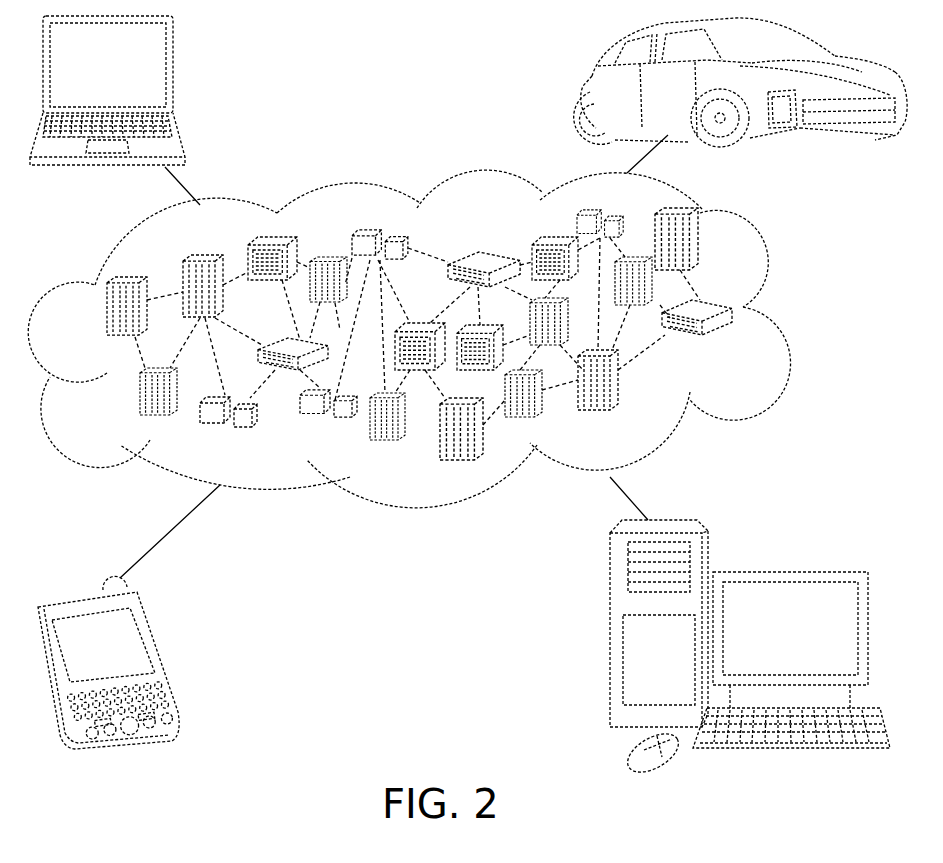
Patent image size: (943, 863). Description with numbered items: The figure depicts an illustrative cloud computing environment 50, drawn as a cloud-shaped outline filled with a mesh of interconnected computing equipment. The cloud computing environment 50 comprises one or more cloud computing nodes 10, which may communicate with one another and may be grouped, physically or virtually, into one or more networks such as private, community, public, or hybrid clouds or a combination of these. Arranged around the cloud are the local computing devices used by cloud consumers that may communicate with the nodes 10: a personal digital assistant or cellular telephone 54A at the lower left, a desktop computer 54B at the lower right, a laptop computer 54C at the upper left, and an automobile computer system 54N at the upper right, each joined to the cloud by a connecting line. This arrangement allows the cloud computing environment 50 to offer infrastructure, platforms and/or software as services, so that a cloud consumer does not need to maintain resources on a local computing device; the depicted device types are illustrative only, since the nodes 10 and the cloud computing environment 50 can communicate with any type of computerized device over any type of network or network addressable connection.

The cloud computing node 10 is at (736, 342).
The cloud computing environment 50 is at (436, 339).
The personal digital assistant or cellular telephone 54A is at (162, 655).
The desktop computer 54B is at (788, 571).
The laptop computer 54C is at (173, 72).
The automobile computer system 54N is at (578, 84).